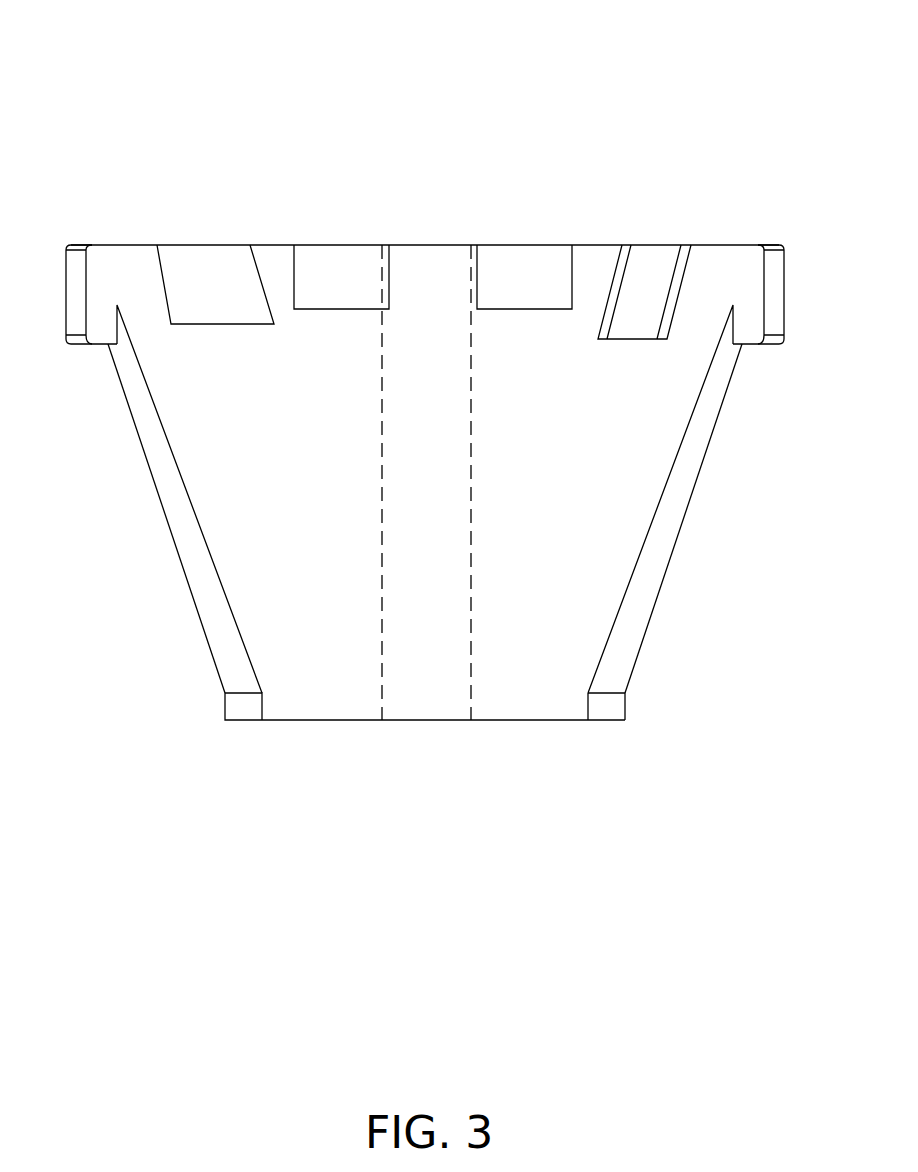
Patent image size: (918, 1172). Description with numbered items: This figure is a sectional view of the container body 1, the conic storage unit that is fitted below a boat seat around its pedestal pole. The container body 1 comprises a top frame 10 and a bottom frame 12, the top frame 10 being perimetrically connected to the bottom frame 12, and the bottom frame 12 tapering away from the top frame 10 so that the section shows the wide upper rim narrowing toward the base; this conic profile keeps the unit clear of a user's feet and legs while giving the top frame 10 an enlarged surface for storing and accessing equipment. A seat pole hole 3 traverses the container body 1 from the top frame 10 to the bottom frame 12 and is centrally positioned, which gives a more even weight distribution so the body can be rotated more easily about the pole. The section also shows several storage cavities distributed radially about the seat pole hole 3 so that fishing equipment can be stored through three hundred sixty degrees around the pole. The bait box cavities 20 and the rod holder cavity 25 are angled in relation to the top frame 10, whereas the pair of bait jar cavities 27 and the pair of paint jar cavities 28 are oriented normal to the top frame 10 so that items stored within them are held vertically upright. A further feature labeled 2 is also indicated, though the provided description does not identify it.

The container body 1 is at (350, 777).
The container closure system 2 is at (710, 37).
The seat pole hole 3 is at (382, 482).
The top frame 10 is at (775, 298).
The bottom frame 12 is at (668, 531).
The bait box cavities 20 is at (203, 258).
The rod holder cavity 25 is at (656, 256).
The bait jar cavities 27 is at (546, 260).
The paint jar cavities 28 is at (334, 265).